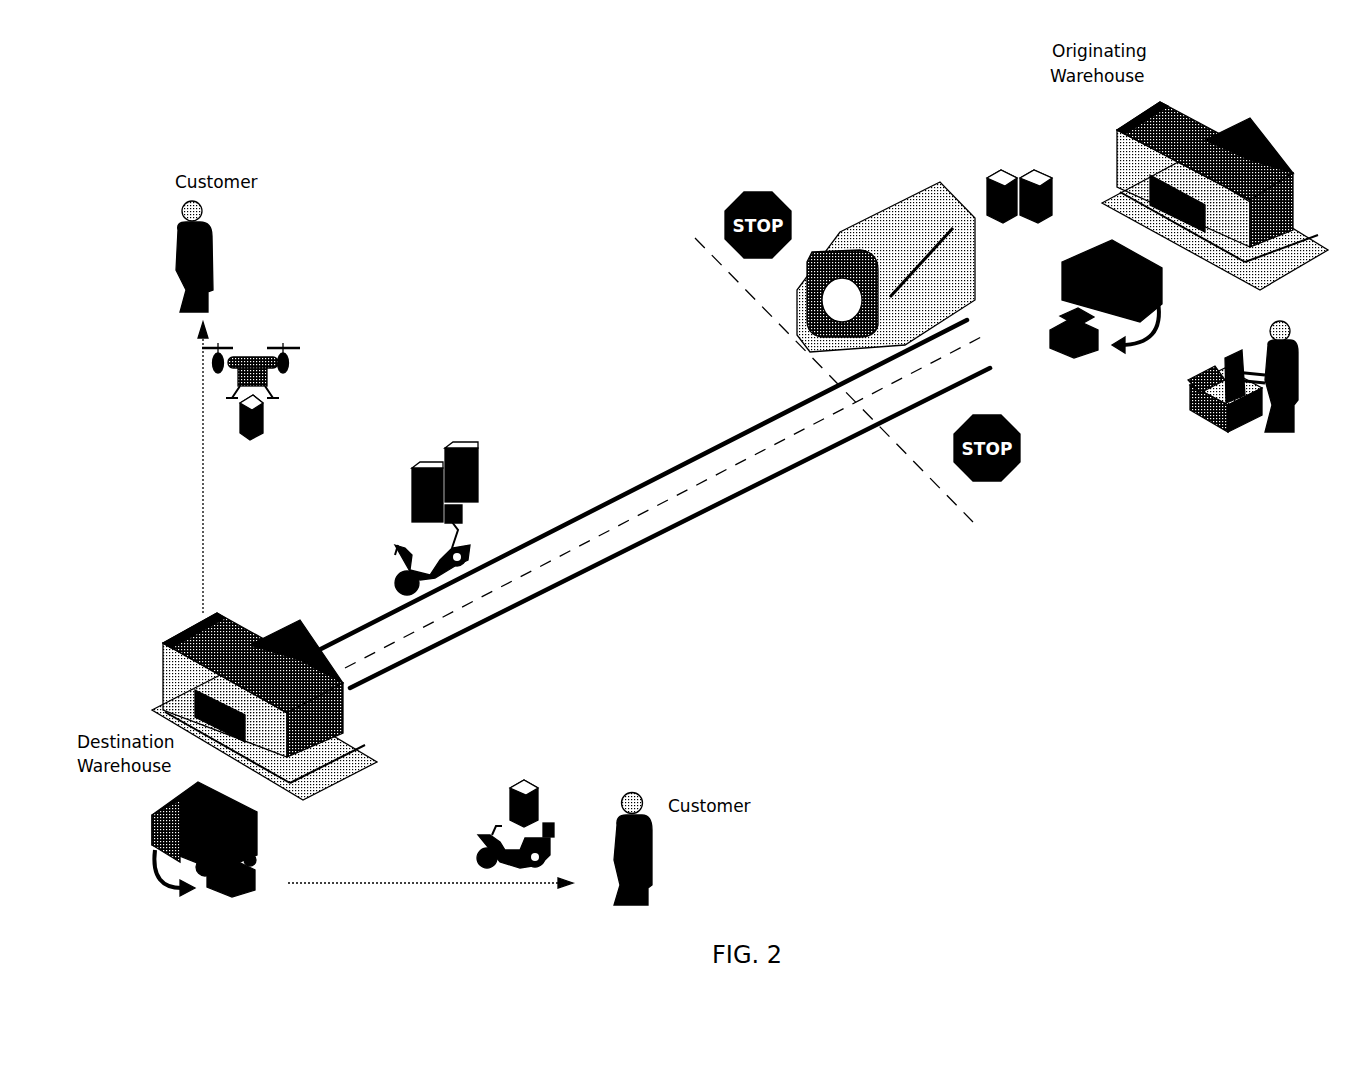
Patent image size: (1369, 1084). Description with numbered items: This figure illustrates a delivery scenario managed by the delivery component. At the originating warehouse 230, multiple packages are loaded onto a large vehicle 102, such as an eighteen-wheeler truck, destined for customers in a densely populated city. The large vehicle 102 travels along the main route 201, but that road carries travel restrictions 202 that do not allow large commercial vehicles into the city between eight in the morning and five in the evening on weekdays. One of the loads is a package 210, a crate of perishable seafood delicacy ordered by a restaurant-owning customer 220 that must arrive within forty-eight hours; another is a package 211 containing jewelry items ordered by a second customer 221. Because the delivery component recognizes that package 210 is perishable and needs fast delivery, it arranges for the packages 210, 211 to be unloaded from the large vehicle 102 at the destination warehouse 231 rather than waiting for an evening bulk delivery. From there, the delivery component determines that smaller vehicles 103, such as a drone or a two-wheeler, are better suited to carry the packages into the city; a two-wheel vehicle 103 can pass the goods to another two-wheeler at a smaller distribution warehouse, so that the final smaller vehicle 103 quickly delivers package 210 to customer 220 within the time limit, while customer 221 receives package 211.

The large vehicle 102 is at (887, 215).
The smaller vehicle 103 is at (288, 377).
The main route 201 is at (510, 635).
The travel restrictions 202 is at (702, 236).
The package 210 is at (990, 172).
The package 211 is at (263, 430).
The customer 220 is at (653, 848).
The customer 221 is at (213, 255).
The originating warehouse 230 is at (1215, 196).
The destination warehouse 231 is at (170, 682).